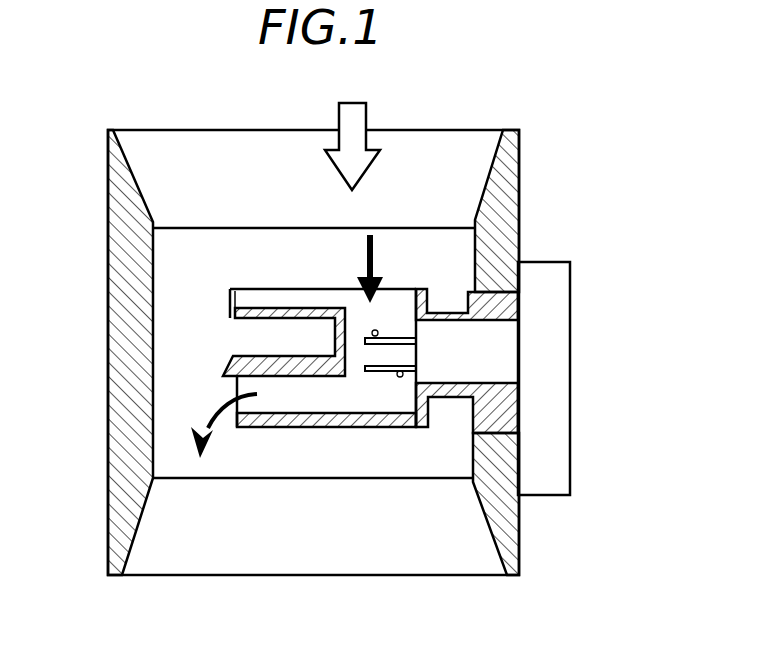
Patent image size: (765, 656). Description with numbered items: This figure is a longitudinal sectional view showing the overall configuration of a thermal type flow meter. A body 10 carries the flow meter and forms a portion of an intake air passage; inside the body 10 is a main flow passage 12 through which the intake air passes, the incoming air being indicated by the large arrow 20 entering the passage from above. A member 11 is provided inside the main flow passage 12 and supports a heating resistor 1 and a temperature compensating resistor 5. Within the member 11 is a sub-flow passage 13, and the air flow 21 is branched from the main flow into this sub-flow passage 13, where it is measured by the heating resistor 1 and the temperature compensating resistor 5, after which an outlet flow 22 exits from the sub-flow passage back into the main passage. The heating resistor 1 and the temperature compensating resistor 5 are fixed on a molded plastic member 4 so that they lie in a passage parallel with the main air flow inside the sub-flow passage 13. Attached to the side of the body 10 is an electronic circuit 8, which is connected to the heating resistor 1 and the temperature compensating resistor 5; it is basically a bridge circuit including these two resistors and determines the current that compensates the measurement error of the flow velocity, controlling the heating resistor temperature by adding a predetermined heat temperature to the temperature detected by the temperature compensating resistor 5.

The heating resistor 1 is at (376, 330).
The molded plastic member 4 is at (487, 355).
The temperature compensating resistor 5 is at (400, 377).
The electronic circuit 8 is at (557, 370).
The body 10 is at (503, 223).
The member 11 is at (222, 370).
The main flow passage 12 is at (237, 270).
The sub-flow passage 13 is at (368, 397).
The inflow direction arrow 20 is at (353, 142).
The air flow 21 is at (400, 252).
The outlet flow 22 is at (216, 428).